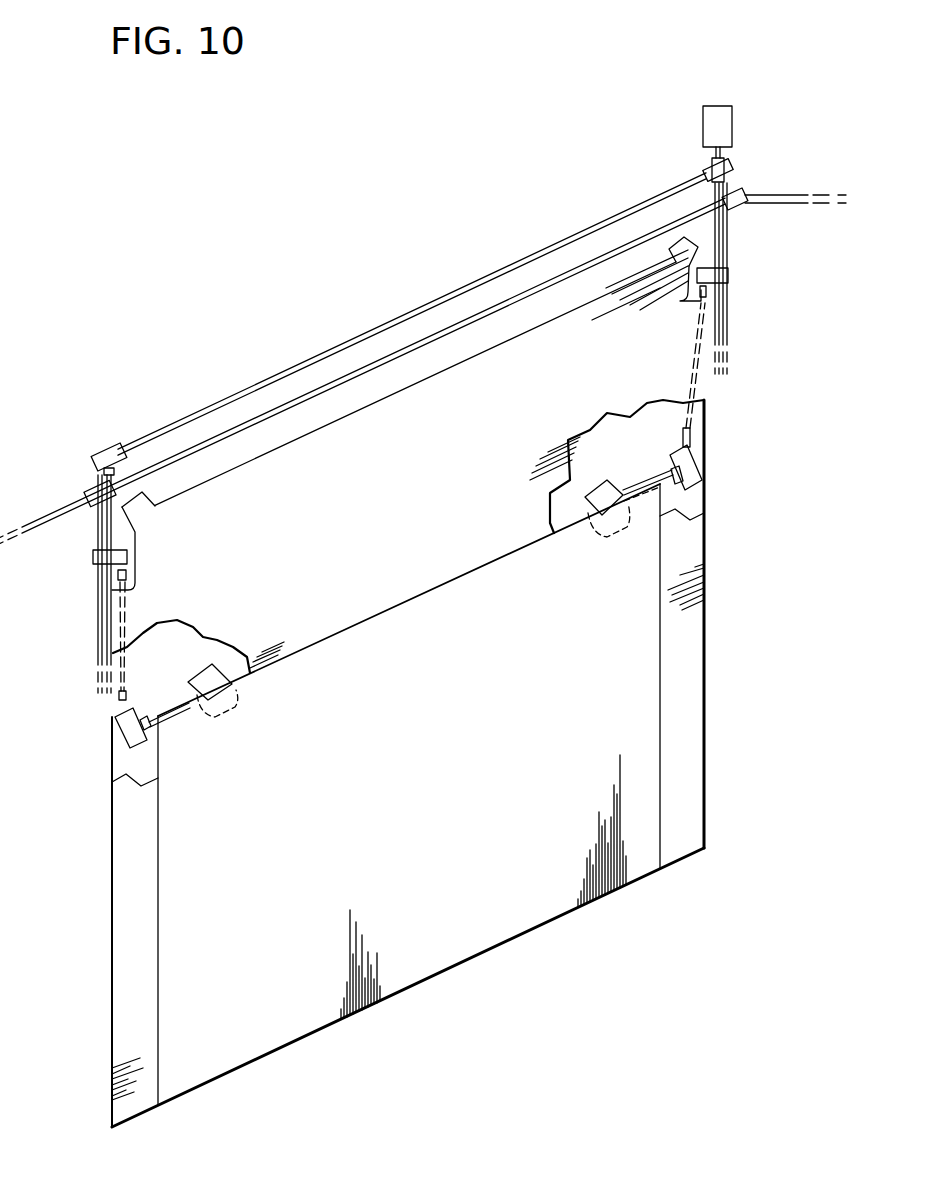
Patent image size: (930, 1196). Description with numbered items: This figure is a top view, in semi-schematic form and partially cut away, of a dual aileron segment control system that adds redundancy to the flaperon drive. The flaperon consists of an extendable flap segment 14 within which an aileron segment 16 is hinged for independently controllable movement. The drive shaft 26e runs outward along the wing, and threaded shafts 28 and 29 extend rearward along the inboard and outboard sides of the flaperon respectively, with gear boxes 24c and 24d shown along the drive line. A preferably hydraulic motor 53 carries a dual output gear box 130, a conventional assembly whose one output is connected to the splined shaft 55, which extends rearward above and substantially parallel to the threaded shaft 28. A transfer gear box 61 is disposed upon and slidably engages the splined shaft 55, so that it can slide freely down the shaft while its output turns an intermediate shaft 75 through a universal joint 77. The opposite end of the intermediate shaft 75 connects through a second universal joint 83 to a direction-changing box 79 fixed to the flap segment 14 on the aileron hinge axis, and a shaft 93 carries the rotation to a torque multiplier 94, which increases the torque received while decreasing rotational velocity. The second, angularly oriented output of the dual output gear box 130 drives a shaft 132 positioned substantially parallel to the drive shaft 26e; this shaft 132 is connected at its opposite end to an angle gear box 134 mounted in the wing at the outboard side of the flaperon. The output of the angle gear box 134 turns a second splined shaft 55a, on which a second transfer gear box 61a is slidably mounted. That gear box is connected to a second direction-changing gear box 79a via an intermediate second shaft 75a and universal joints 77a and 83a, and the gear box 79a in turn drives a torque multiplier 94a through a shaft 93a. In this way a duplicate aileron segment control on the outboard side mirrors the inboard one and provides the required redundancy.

The flap segment 14 is at (398, 500).
The aileron segment 16 is at (445, 693).
The conduit 24c is at (746, 190).
The conduit 24d is at (87, 494).
The shaft 26e is at (462, 322).
The threaded shaft 28 is at (729, 316).
The threaded shaft 29 is at (98, 620).
The motor 53 is at (717, 105).
The splined shaft 55 is at (728, 236).
The second splined shaft 55a is at (112, 540).
The transfer gear box 61 is at (730, 276).
The second transfer gear box 61a is at (93, 558).
The intermediate shaft 75 is at (692, 412).
The intermediate second shaft 75a is at (126, 655).
The universal joint 77 is at (689, 302).
The universal joint 77a is at (128, 574).
The direction-changing box 79 is at (704, 470).
The second direction-changing gear box 79a is at (116, 742).
The second universal joint 83 is at (692, 438).
The universal joint 83a is at (119, 697).
The shaft 93 is at (656, 480).
The shaft 93a is at (149, 712).
The torque multiplier 94 is at (600, 482).
The torque multiplier 94a is at (218, 666).
The dual output gear box 130 is at (706, 160).
The shaft 132 is at (525, 257).
The angle gear box 134 is at (106, 446).